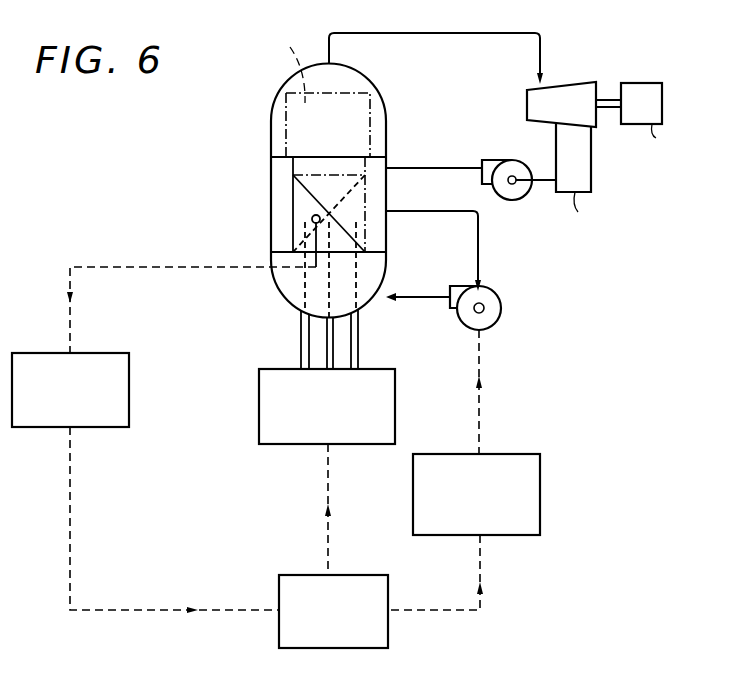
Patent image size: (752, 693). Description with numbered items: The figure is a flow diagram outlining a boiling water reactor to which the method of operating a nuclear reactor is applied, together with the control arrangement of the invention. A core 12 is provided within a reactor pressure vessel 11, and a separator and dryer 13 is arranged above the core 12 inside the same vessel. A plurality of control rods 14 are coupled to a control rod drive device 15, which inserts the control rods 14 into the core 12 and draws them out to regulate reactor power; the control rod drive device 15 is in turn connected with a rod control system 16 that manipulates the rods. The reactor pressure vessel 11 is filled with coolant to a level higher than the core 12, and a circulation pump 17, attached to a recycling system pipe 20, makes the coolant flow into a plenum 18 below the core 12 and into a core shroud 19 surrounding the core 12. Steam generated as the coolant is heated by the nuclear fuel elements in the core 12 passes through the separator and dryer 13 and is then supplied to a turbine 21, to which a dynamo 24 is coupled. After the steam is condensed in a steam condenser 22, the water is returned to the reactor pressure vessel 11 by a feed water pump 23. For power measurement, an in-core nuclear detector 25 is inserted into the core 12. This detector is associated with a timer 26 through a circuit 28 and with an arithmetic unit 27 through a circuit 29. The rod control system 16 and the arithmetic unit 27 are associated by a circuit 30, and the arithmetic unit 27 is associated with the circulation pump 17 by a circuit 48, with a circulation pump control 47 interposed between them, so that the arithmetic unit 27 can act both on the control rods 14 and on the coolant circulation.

The reactor pressure vessel 11 is at (386, 101).
The core 12 is at (303, 186).
The separator and dryer 13 is at (286, 118).
The control rods 14 is at (305, 284).
The control rod drive device 15 is at (360, 348).
The rod control system 16 is at (262, 370).
The circulation pump 17 is at (502, 307).
The plenum 18 is at (378, 275).
The core shroud 19 is at (367, 197).
The recycling system pipe 20 is at (478, 237).
The turbine 21 is at (556, 83).
The steam condenser 22 is at (592, 178).
The feed water pump 23 is at (522, 196).
The dynamo 24 is at (652, 83).
The in-core nuclear detector 25 is at (312, 219).
The timer 26 is at (50, 353).
The arithmetic unit 27 is at (340, 575).
The circuit 28 is at (110, 265).
The circuit 29 is at (143, 608).
The circuit 30 is at (330, 477).
The circulation pump control 47 is at (541, 487).
The circuit 48 is at (481, 565).